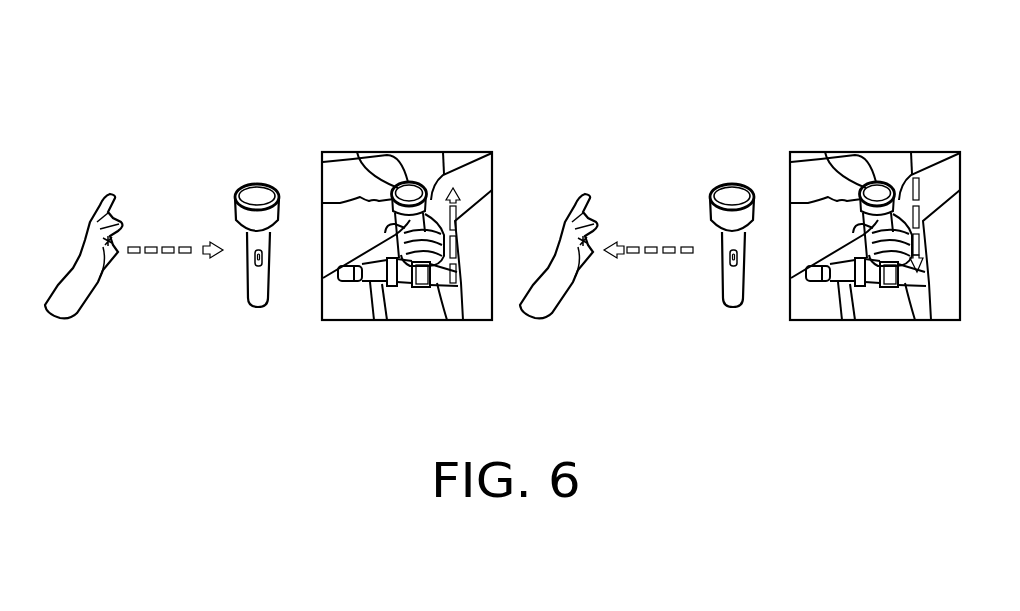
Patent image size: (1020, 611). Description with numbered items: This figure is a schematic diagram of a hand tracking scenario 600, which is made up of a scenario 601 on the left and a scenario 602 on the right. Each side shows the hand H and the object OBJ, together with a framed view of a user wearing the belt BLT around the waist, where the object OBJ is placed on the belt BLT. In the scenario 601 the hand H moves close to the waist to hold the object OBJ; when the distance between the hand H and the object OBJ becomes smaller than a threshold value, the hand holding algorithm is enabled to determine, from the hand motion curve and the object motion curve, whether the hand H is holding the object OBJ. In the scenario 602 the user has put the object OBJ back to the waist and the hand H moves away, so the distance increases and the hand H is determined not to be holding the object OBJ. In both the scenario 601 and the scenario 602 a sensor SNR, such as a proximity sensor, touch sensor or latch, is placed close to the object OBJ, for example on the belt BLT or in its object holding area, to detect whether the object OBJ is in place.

The hand tracking scenario 600 is at (845, 430).
The scenario 601 is at (170, 94).
The scenario 602 is at (637, 94).
The hand H is at (103, 196).
The object OBJ is at (254, 187).
The belt BLT is at (362, 283).
The sensor SNR is at (456, 288).